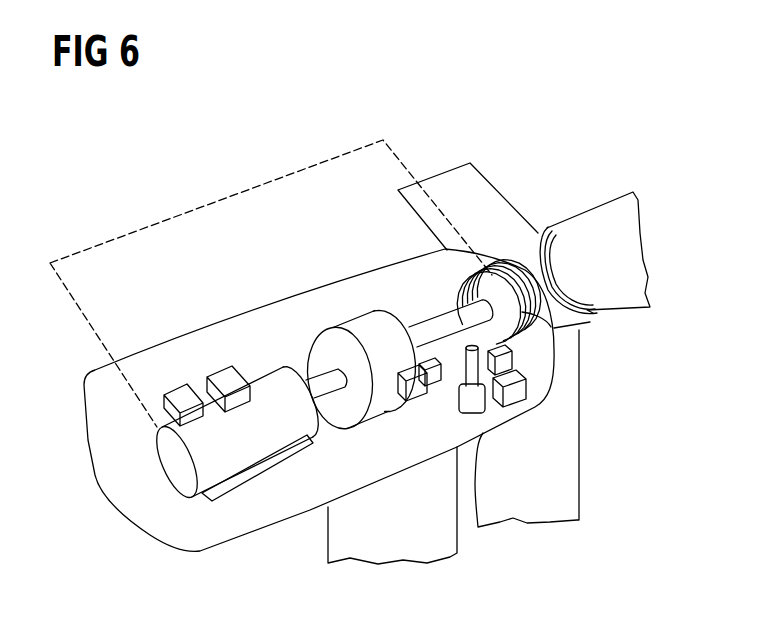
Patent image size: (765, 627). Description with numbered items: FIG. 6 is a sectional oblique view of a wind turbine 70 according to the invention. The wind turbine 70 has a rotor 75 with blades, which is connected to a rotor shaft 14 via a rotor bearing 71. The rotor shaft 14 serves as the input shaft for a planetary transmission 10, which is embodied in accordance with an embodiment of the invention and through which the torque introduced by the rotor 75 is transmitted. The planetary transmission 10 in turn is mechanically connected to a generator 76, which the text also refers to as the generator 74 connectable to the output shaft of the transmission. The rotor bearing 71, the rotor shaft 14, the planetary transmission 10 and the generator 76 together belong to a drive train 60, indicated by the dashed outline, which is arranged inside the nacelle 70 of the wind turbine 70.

The wind turbine 70 is at (293, 114).
The drive train 60 is at (240, 195).
The generator 74 is at (250, 312).
The generator 76 is at (177, 463).
The planetary transmission 10 is at (355, 321).
The rotor shaft 14 is at (428, 328).
The rotor bearing 71 is at (566, 329).
The rotor 75 is at (565, 467).